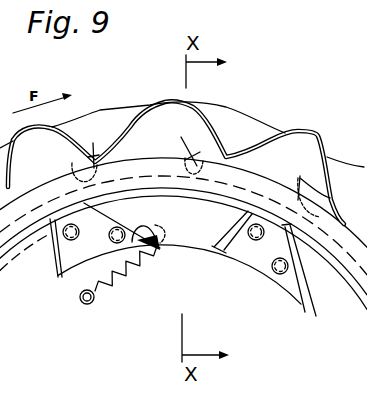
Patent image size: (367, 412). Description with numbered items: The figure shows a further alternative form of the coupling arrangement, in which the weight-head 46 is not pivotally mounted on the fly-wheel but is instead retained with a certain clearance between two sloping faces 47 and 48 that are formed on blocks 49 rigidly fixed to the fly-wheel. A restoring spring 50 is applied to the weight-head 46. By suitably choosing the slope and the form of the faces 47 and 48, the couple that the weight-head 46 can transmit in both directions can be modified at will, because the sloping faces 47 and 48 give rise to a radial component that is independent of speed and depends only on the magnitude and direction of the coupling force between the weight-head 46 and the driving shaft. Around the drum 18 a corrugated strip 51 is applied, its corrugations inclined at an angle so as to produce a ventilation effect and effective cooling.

The drum 18 is at (195, 114).
The weight-head 46 is at (197, 240).
The sloping face 47 is at (228, 244).
The sloping face 48 is at (161, 249).
The block 49 is at (80, 262).
The restoring spring 50 is at (112, 263).
The corrugated strip 51 is at (250, 123).